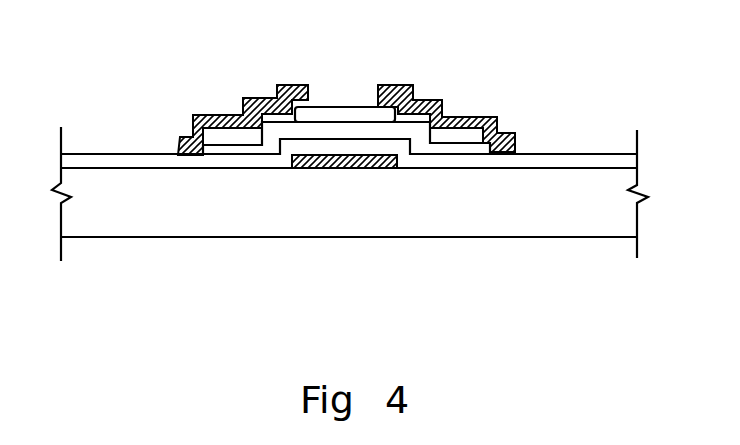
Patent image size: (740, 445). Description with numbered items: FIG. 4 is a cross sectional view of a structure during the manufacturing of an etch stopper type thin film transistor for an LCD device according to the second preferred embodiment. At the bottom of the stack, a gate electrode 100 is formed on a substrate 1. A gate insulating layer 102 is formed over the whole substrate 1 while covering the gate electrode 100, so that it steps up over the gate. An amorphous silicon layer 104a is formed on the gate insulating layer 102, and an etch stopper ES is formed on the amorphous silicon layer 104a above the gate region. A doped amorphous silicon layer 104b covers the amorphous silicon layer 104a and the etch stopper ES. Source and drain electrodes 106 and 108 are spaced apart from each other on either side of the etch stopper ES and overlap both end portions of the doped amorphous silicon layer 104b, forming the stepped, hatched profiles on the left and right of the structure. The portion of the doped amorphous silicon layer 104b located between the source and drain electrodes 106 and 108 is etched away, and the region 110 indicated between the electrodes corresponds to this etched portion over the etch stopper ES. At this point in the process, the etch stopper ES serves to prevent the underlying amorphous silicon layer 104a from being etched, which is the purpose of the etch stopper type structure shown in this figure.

The substrate 1 is at (350, 194).
The gate electrode 100 is at (370, 168).
The gate insulating layer 102 is at (574, 153).
The amorphous silicon layer 104a is at (456, 145).
The doped amorphous silicon layer 104b is at (457, 130).
The etch stopper ES is at (348, 104).
The source electrode 106 is at (264, 99).
The drain electrode 108 is at (503, 128).
The channel region 110 is at (327, 123).